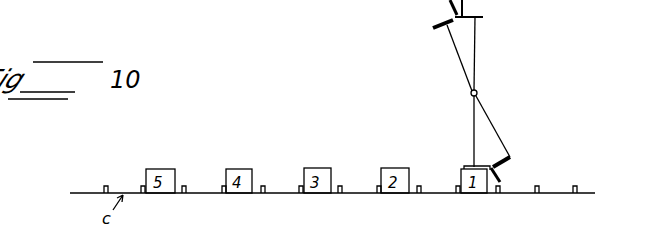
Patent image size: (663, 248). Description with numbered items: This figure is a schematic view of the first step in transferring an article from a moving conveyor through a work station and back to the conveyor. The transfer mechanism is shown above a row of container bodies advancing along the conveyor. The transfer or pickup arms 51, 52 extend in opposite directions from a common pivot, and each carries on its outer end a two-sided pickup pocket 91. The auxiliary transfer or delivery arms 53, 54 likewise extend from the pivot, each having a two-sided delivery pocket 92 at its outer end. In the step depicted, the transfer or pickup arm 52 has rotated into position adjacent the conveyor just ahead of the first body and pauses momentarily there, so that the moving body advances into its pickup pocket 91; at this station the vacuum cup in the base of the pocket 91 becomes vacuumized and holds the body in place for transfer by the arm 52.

The transfer or pickup arm 51 is at (478, 70).
The transfer or pickup arm 52 is at (472, 140).
The auxiliary transfer or delivery arm 53 is at (461, 68).
The auxiliary transfer or delivery arm 54 is at (492, 131).
The two-sided pickup pocket 91 is at (483, 18).
The two-sided delivery pocket 92 is at (440, 31).